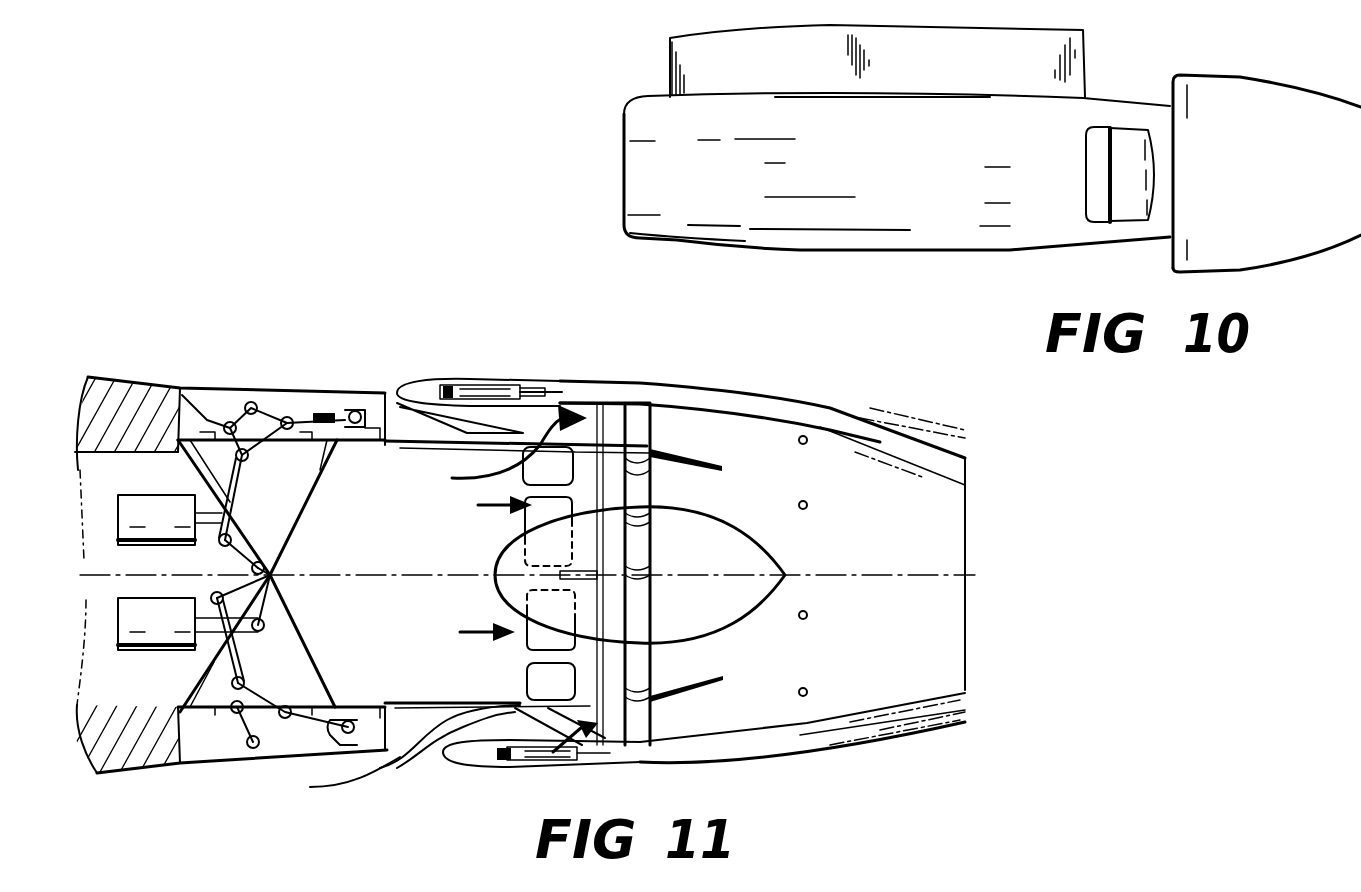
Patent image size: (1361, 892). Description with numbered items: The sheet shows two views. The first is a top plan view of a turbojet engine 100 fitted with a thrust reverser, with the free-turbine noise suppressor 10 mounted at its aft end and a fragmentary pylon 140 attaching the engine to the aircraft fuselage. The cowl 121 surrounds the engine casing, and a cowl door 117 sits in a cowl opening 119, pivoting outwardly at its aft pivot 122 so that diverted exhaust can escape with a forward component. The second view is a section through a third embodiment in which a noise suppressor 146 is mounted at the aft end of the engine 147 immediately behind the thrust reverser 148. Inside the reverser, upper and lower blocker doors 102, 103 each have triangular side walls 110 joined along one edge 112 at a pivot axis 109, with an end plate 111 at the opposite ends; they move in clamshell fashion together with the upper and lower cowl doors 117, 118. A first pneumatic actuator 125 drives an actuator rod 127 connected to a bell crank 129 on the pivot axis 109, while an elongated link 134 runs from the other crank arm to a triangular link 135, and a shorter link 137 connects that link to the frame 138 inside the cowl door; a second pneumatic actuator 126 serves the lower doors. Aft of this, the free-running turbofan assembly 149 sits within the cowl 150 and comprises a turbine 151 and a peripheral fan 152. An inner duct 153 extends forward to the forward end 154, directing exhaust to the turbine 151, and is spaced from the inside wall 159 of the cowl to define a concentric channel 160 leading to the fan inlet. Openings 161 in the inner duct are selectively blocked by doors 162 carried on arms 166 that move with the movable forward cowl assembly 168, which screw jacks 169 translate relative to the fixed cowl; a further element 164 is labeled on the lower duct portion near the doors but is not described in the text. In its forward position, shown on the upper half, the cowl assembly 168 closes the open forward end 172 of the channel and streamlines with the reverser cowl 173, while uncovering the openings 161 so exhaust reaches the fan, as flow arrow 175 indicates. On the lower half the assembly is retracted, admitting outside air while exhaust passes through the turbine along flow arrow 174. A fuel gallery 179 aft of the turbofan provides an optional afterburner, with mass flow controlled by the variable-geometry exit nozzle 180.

In FIG. 10, the free-turbine noise suppressor 10 is at (1275, 272).
In FIG. 10, the turbojet engine 100 is at (762, 86).
In FIG. 11, the upper blocker door 102 is at (290, 547).
In FIG. 11, the lower blocker door 103 is at (292, 636).
In FIG. 11, the pivot axis 109 is at (278, 578).
In FIG. 11, the side wall 110 is at (190, 470).
In FIG. 11, the end plate 111 is at (312, 445).
In FIG. 11, the edge 112 is at (310, 505).
In FIG. 10, the upper cowl door 117 is at (1120, 137).
In FIG. 11, the lower cowl door 118 is at (200, 385).
In FIG. 10, the cowl opening 119 is at (1098, 172).
In FIG. 10, the cowl 121 is at (878, 112).
In FIG. 11, the cowl 121 is at (115, 775).
In FIG. 11, the pivot 122 is at (343, 400).
In FIG. 11, the first pneumatic actuator 125 is at (150, 615).
In FIG. 11, the second pneumatic actuator 126 is at (137, 508).
In FIG. 11, the actuator rod 127 is at (197, 615).
In FIG. 11, the bell crank 129 is at (240, 556).
In FIG. 11, the elongated link 134 is at (235, 508).
In FIG. 11, the triangular link 135 is at (280, 397).
In FIG. 11, the shorter elongated link 137 is at (250, 402).
In FIG. 11, the frame 138 is at (235, 388).
In FIG. 10, the pylon 140 is at (730, 40).
In FIG. 11, the noise suppressor 146 is at (787, 378).
In FIG. 11, the engine 147 is at (113, 348).
In FIG. 11, the thrust reverser 148 is at (552, 331).
In FIG. 11, the free-running turbofan assembly 149 is at (698, 553).
In FIG. 11, the cowl 150 is at (722, 762).
In FIG. 11, the turbine 151 is at (652, 482).
In FIG. 11, the fan 152 is at (652, 429).
In FIG. 11, the inner duct 153 is at (403, 447).
In FIG. 11, the forward end 154 is at (400, 710).
In FIG. 11, the inside wall 159 is at (618, 410).
In FIG. 11, the concentric channel 160 is at (503, 408).
In FIG. 11, the openings 161 is at (553, 472).
In FIG. 11, the doors 162 is at (490, 442).
In FIG. 11, the lower cascade 164 is at (548, 705).
In FIG. 11, the arms 166 is at (452, 380).
In FIG. 11, the movable forward cowl assembly 168 is at (395, 392).
In FIG. 11, the screw jacks 169 is at (548, 392).
In FIG. 11, the open forward end 172 is at (412, 770).
In FIG. 11, the cowl 173 is at (310, 788).
In FIG. 11, the flow arrow 174 is at (478, 632).
In FIG. 11, the flow arrow 175 is at (472, 485).
In FIG. 11, the fuel gallery 179 is at (808, 506).
In FIG. 11, the variable-geometry exit nozzle 180 is at (900, 712).